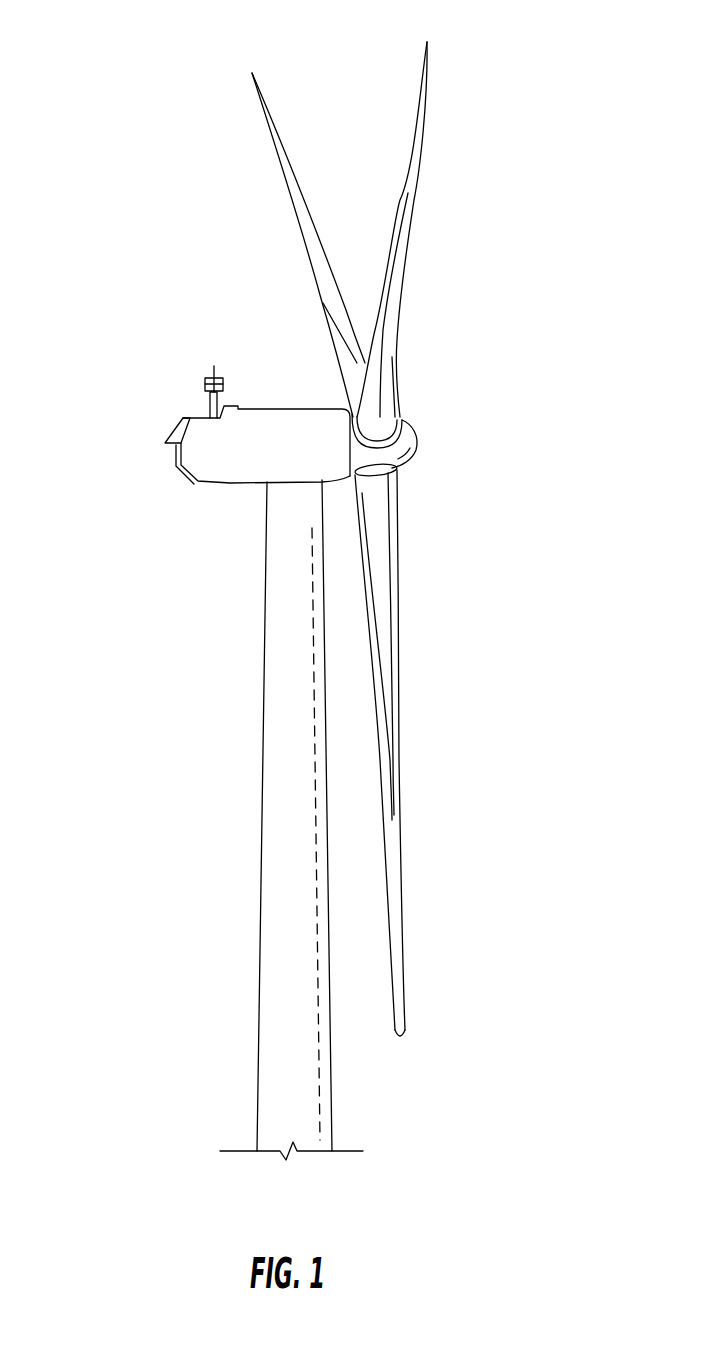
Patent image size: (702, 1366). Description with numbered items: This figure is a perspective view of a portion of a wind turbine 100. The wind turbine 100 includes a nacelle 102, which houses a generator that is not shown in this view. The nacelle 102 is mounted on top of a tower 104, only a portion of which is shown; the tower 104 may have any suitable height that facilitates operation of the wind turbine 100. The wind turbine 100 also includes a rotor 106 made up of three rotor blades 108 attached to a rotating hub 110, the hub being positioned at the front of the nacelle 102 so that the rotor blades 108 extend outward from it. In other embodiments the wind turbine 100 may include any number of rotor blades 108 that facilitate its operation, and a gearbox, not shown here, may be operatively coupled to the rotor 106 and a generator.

The wind turbine 100 is at (309, 601).
The nacelle 102 is at (228, 486).
The tower 104 is at (260, 837).
The rotor 106 is at (412, 539).
The rotor blades 108 is at (397, 228).
The rotating hub 110 is at (417, 451).